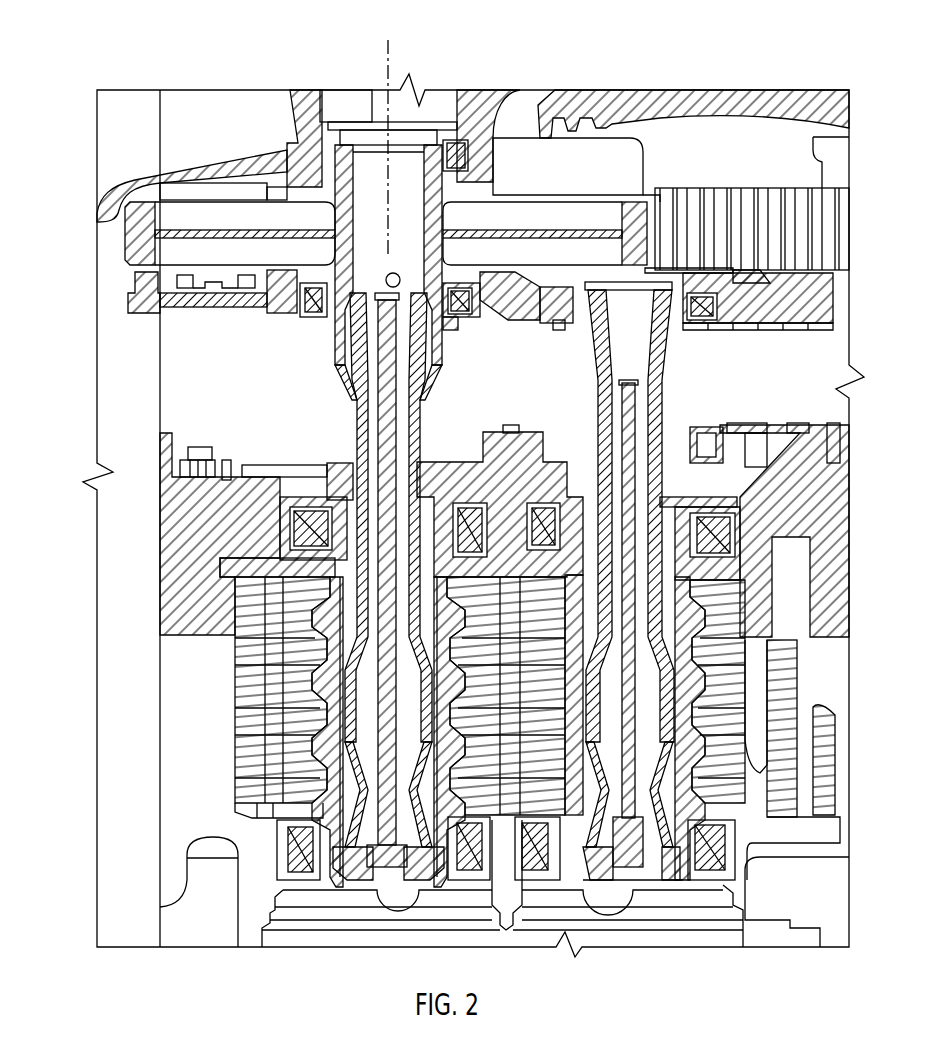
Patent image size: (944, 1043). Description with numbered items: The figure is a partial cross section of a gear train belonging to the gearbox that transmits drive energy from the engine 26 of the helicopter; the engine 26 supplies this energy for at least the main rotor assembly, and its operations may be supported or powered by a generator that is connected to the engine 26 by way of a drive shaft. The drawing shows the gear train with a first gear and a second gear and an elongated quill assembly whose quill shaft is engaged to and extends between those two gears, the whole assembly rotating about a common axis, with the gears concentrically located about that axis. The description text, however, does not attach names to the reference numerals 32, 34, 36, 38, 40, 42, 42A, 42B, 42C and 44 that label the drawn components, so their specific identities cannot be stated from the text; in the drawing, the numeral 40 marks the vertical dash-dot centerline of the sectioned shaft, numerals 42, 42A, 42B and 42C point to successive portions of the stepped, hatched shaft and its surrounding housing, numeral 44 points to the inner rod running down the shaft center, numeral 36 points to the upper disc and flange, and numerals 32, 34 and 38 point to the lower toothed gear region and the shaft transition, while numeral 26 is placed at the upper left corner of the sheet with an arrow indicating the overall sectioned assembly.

The engine 26 is at (80, 93).
The gear assembly 32 is at (222, 731).
The gear 34 is at (300, 690).
The rotor disc 36 is at (128, 247).
The shaft portion 38 is at (345, 440).
The axis of rotation 40 is at (390, 77).
The shaft 42 is at (360, 403).
The first shaft portion 42A is at (347, 758).
The second shaft portion 42B is at (360, 482).
The third shaft portion 42C is at (290, 158).
The inner shaft 44 is at (378, 593).